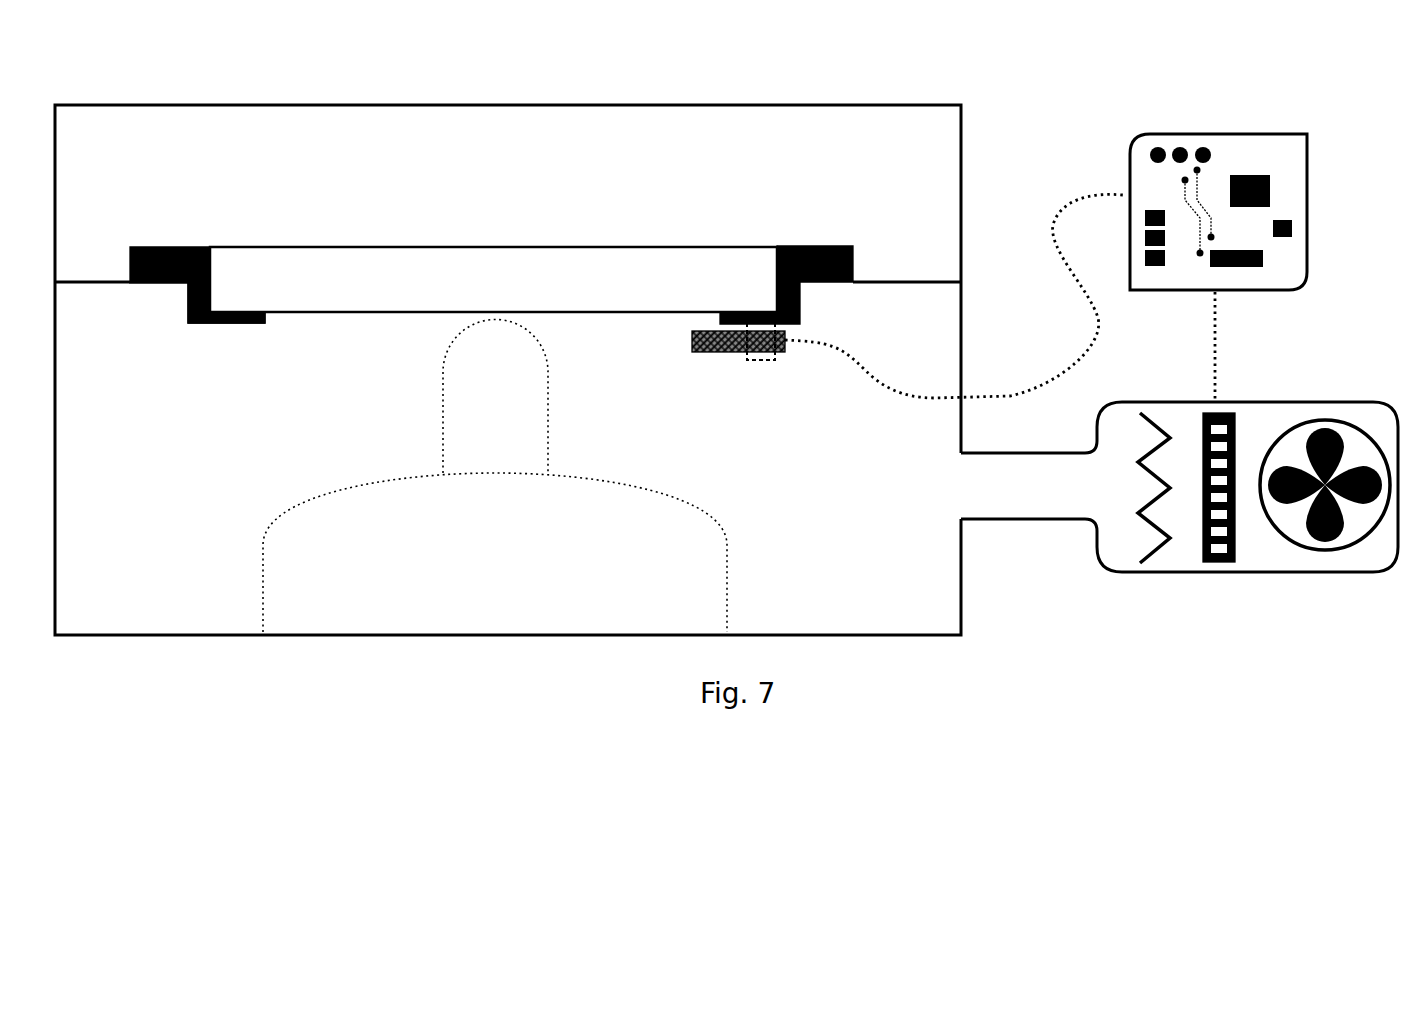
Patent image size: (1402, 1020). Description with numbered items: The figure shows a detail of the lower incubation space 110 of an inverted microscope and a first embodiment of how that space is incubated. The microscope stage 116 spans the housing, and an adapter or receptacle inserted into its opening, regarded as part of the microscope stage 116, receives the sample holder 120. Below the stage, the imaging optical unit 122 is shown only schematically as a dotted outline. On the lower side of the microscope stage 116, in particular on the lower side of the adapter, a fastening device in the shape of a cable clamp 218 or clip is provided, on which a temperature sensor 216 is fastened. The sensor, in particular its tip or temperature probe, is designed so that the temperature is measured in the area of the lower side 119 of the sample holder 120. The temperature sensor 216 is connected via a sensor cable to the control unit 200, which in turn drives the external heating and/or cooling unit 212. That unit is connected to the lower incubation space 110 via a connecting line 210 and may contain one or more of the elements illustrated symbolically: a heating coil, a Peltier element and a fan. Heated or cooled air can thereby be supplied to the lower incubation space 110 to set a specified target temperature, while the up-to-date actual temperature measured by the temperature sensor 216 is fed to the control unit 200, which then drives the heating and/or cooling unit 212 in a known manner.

The lower incubation space 110 is at (428, 125).
The microscope stage 116 is at (77, 282).
The lower side of the sample holder 119 is at (318, 313).
The sample holder 120 is at (248, 247).
The imaging optical unit 122 is at (440, 397).
The control unit 200 is at (1137, 157).
The connecting line 210 is at (1045, 522).
The heating and/or cooling unit 212 is at (1340, 402).
The temperature sensor 216 is at (708, 345).
The cable clamp 218 is at (762, 327).